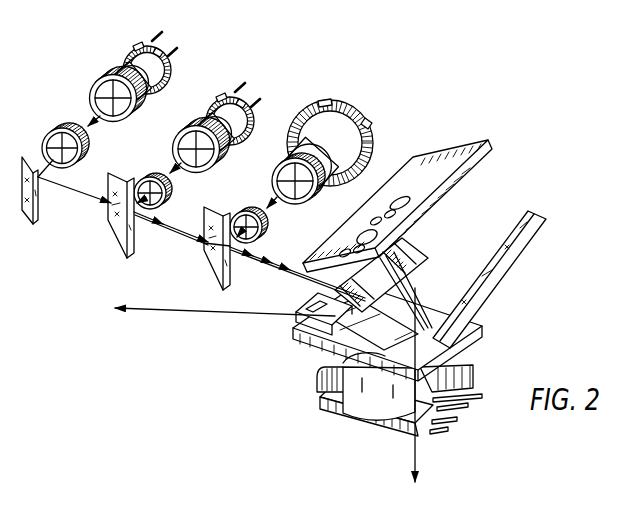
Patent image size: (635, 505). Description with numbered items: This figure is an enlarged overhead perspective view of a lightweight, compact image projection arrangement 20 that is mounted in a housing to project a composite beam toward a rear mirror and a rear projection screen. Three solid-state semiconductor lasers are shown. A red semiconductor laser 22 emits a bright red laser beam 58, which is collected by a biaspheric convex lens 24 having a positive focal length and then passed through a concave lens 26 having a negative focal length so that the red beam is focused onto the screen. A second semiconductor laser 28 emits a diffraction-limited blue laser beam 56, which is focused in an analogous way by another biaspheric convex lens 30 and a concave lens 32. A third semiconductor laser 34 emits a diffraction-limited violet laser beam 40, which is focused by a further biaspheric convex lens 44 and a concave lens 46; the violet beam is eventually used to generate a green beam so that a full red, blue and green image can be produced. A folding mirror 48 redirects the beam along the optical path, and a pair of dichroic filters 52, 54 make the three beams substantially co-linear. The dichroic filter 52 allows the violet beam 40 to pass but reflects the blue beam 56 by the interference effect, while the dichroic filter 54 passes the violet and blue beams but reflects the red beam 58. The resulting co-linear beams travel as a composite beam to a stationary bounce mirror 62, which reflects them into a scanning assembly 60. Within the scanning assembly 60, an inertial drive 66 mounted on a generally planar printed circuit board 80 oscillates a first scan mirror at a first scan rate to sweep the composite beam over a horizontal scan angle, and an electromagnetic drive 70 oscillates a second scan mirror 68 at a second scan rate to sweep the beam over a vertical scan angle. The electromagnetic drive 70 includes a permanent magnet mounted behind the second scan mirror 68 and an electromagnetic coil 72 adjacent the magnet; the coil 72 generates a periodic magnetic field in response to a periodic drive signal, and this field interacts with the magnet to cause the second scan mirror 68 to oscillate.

The image projection arrangement 20 is at (401, 60).
The semiconductor laser 22 is at (369, 147).
The biaspheric convex lens 24 is at (284, 156).
The concave lens 26 is at (240, 210).
The semiconductor laser 28 is at (227, 110).
The biaspheric convex lens 30 is at (201, 130).
The concave lens 32 is at (141, 176).
The semiconductor laser 34 is at (132, 48).
The violet laser beam 40 is at (42, 182).
The biaspheric convex lens 44 is at (95, 82).
The concave lens 46 is at (57, 126).
The folding mirror 48 is at (30, 228).
The dichroic filter 52 is at (126, 259).
The dichroic filter 54 is at (231, 282).
The blue laser beam 56 is at (178, 241).
The red laser beam 58 is at (297, 287).
The scanning assembly 60 is at (499, 327).
The stationary bounce mirror 62 is at (514, 265).
The inertial drive 66 is at (427, 247).
The second scan mirror 68 is at (343, 363).
The electromagnetic drive 70 is at (464, 368).
The electromagnetic coil 72 is at (330, 403).
The printed circuit board 80 is at (478, 166).